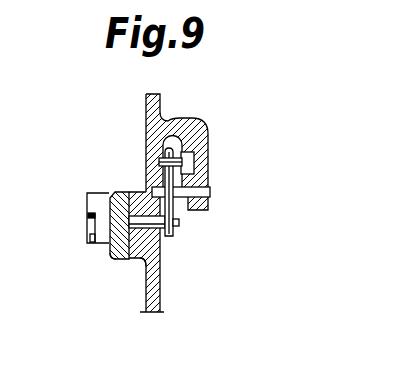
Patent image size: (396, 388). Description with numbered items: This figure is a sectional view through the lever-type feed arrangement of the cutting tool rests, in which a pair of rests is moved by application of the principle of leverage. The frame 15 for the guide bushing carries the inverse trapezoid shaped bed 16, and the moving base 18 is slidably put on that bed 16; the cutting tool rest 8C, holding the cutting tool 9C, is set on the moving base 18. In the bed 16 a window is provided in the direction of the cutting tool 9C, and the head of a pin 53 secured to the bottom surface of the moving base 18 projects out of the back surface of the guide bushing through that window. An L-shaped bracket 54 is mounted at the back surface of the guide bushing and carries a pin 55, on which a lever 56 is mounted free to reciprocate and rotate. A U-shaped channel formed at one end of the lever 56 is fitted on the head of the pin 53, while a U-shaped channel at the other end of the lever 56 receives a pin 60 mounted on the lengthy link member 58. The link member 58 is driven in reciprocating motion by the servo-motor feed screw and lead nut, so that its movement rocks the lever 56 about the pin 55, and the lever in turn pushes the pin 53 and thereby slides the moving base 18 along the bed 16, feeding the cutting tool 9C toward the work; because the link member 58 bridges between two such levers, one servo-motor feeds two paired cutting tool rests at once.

The frame 15 is at (166, 120).
The L-shaped bracket 54 is at (205, 128).
The link member 58 is at (193, 162).
The pin 60 is at (162, 163).
The pin 55 is at (212, 192).
The lever 56 is at (178, 221).
The pin 53 is at (152, 222).
The moving base 18 is at (114, 196).
The bed 16 is at (131, 258).
The cutting tool 9C is at (88, 218).
The cutting tool rest 8C is at (93, 245).